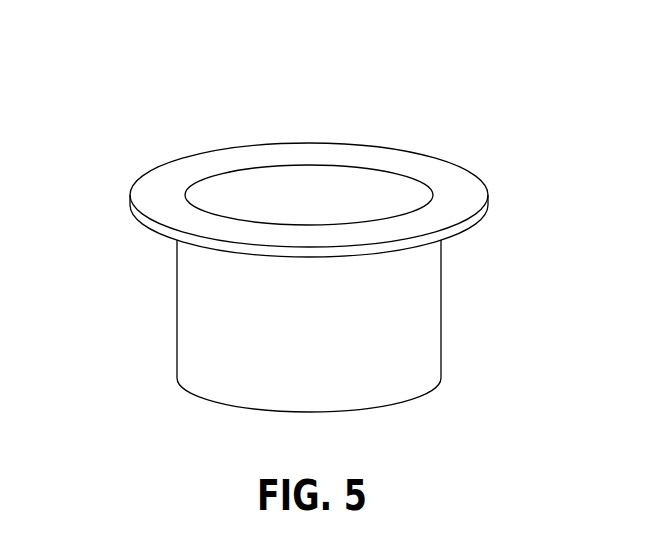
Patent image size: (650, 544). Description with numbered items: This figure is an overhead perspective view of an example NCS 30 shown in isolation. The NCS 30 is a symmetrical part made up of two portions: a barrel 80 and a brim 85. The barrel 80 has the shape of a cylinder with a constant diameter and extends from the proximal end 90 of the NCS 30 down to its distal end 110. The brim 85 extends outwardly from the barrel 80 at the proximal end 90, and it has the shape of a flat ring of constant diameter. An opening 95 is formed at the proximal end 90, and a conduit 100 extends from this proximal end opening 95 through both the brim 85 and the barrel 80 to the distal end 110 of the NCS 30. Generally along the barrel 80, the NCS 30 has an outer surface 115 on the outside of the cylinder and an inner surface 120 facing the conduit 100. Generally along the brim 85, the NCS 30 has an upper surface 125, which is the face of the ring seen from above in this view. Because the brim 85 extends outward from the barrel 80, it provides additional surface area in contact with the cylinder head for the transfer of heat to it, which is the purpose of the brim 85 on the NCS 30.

The NCS 30 is at (317, 218).
The barrel 80 is at (177, 263).
The brim 85 is at (147, 172).
The proximal end 90 is at (314, 154).
The opening 95 is at (288, 165).
The conduit 100 is at (352, 185).
The distal end 110 is at (329, 326).
The outer surface 115 is at (218, 289).
The inner surface 120 is at (267, 198).
The upper surface 125 is at (182, 220).